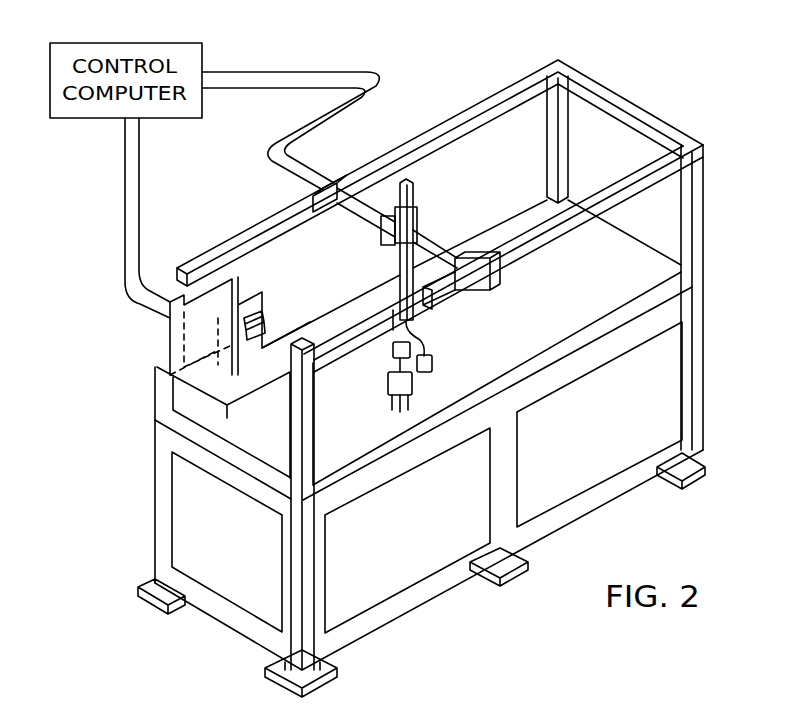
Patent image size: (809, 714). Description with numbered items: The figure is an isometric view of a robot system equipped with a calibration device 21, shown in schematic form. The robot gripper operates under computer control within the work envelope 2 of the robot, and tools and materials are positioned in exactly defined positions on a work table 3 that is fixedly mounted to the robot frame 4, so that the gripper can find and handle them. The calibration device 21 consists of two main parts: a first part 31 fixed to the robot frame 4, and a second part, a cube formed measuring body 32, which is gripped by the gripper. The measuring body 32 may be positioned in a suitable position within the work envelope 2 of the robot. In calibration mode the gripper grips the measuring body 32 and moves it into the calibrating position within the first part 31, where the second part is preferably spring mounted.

The work envelope 2 is at (647, 117).
The work table 3 is at (664, 261).
The robot frame 4 is at (697, 424).
The calibration device 21 is at (149, 331).
The first part 31 is at (257, 400).
The cube formed measuring body 32 is at (241, 283).